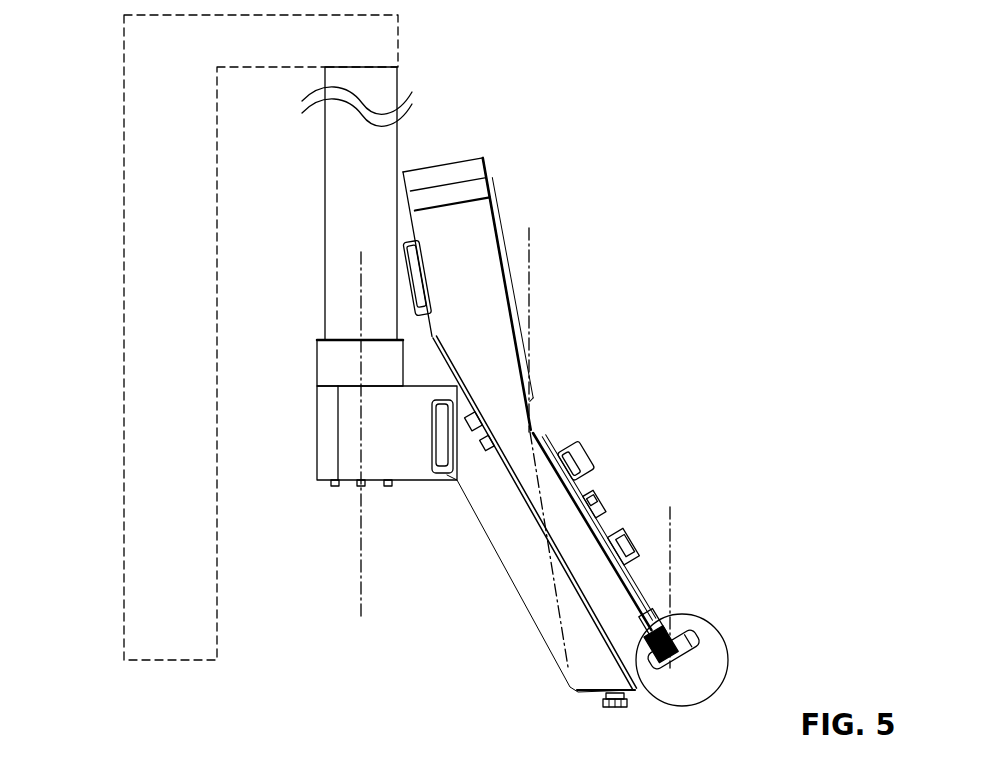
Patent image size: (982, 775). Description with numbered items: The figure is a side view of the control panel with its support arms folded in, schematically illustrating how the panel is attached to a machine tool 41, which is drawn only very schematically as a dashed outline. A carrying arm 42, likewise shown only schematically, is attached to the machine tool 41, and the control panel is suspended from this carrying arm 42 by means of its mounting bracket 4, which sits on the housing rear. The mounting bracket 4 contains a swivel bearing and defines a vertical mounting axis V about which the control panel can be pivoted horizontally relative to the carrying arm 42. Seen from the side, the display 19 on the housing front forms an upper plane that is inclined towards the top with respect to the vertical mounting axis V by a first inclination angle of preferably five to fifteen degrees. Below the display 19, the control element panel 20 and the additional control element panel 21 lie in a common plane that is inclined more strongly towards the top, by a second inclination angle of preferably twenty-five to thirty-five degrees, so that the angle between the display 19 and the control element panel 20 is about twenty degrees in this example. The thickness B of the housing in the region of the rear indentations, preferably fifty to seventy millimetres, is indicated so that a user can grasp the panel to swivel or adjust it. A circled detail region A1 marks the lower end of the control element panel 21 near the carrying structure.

The mounting bracket 4 is at (412, 462).
The display 19 is at (513, 325).
The control element panel 20 is at (577, 490).
The additional control element panel 21 is at (643, 613).
The machine tool 41 is at (142, 387).
The carrying arm 42 is at (292, 40).
The detail region A1 is at (717, 693).
The vertical mounting axis V is at (361, 600).
The thickness B is at (467, 473).